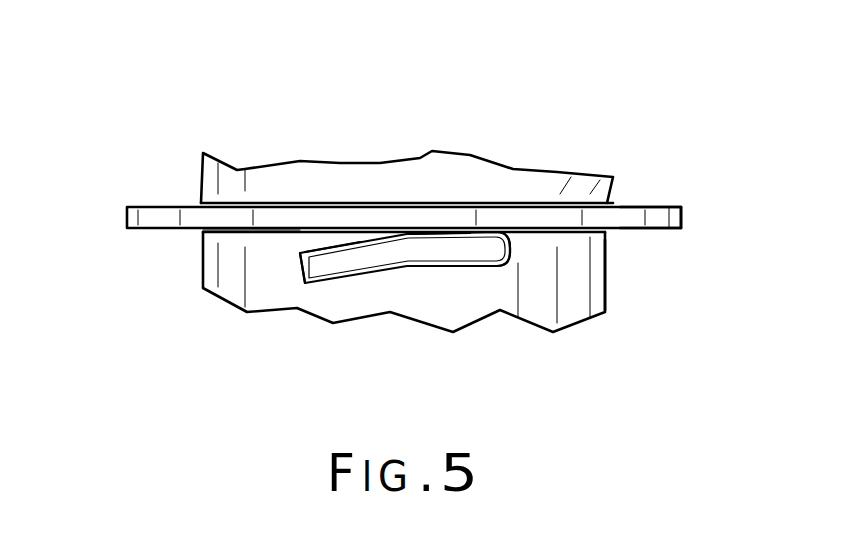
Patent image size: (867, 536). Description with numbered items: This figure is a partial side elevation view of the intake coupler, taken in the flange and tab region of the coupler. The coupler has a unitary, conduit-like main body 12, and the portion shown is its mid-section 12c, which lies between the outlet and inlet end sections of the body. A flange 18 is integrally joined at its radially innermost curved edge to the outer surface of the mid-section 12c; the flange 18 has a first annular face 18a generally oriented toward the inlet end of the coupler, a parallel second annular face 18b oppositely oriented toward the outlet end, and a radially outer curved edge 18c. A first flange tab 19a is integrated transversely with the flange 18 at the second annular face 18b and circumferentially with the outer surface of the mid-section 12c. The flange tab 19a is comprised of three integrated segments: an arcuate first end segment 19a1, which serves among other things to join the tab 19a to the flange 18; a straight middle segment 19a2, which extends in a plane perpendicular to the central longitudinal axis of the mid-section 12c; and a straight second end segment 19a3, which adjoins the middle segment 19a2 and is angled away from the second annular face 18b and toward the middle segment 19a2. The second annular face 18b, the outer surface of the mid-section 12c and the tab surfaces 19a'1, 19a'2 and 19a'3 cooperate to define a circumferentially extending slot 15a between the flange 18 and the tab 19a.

The main body 12 is at (125, 272).
The mid-section 12c is at (580, 285).
The circumferentially extending slot 15a is at (287, 248).
The flange 18 is at (131, 173).
The first annular face 18a is at (650, 205).
The second annular face 18b is at (652, 230).
The radially outer curved edge 18c is at (683, 217).
The first flange tab 19a is at (405, 325).
The arcuate first end segment 19a1 is at (510, 245).
The straight middle segment 19a2 is at (456, 257).
The straight second end segment 19a3 is at (332, 262).
The surface of arcuate first end segment 19a'1 is at (527, 146).
The surface of straight middle segment 19a'2 is at (442, 130).
The surface of straight second end segment 19a'3 is at (342, 144).